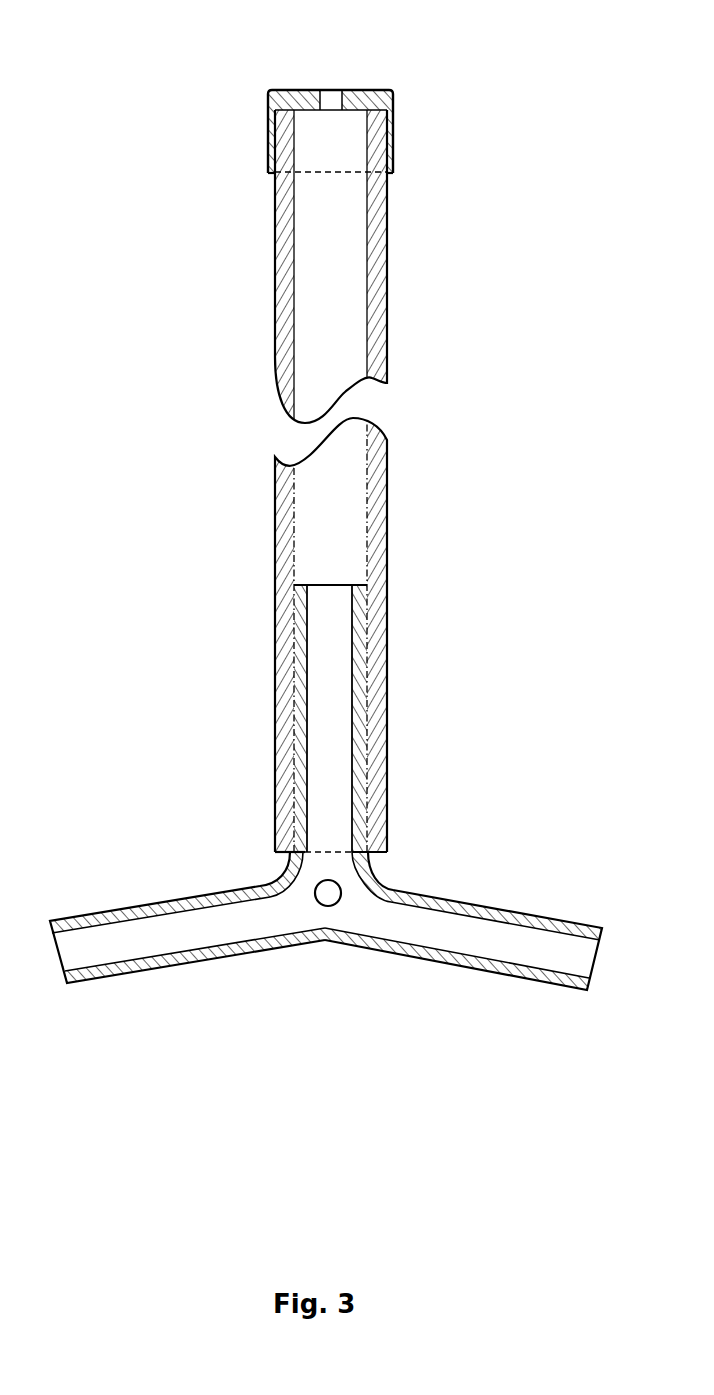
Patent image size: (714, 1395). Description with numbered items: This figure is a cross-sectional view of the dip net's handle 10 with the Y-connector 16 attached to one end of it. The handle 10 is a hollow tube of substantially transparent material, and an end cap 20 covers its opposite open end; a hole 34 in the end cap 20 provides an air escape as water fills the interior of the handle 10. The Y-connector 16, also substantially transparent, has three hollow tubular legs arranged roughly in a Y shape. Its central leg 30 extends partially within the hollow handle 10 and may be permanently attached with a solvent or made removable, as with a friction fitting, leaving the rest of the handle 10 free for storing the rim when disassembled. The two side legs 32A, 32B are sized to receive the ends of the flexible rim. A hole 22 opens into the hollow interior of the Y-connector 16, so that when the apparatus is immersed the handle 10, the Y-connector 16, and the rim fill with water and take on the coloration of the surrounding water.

The handle 10 is at (388, 502).
The end cap 20 is at (394, 132).
The hole 34 is at (324, 82).
The central leg 30 is at (324, 582).
The Y-connector 16 is at (326, 941).
The hole 22 is at (338, 902).
The side leg 32A is at (176, 985).
The side leg 32B is at (470, 985).